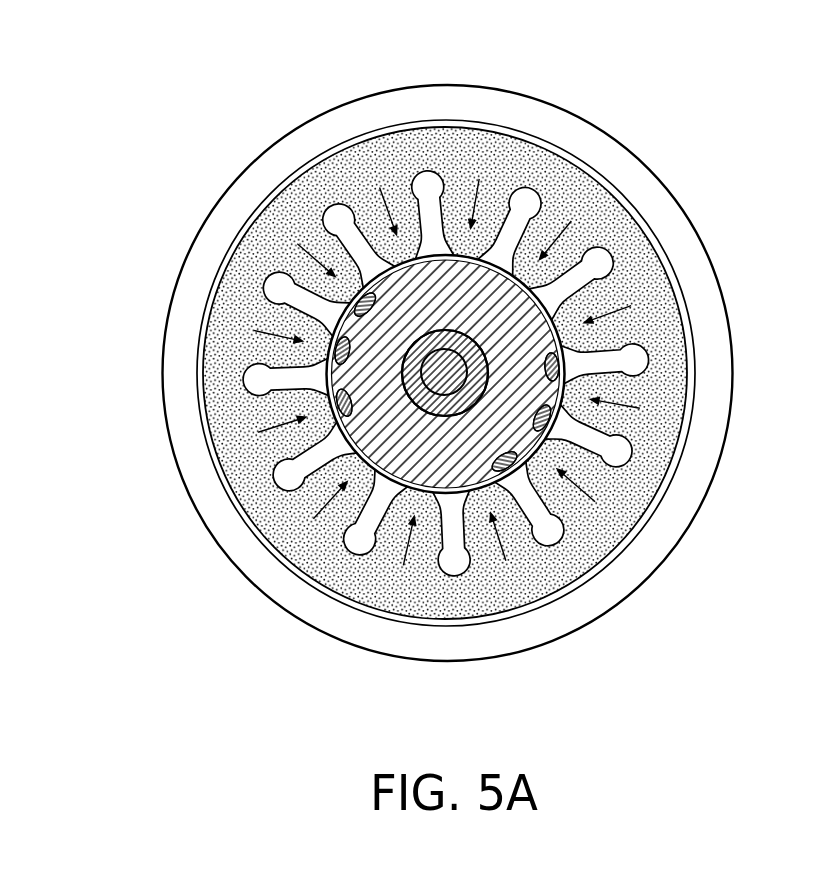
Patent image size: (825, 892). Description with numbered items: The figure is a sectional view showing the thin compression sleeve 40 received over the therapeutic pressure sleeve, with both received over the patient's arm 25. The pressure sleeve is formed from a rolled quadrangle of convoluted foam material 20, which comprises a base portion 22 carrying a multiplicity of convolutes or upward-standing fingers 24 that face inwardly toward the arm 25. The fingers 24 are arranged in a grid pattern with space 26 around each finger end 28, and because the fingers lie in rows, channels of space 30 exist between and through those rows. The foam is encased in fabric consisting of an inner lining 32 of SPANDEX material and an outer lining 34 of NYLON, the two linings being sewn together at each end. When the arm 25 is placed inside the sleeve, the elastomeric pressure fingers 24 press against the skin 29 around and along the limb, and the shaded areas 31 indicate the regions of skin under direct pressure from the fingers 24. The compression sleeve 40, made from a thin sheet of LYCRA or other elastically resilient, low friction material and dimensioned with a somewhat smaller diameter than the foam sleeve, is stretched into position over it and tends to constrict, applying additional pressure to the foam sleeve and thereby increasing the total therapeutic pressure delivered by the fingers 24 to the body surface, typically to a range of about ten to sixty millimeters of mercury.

The convoluted foam material 20 is at (288, 227).
The base portion 22 is at (632, 503).
The fingers 24 is at (313, 423).
The arm 25 is at (428, 451).
The space 26 is at (460, 573).
The finger end 28 is at (423, 391).
The skin 29 is at (537, 202).
The channels of space 30 is at (540, 410).
The shaded areas 31 is at (402, 314).
The inner lining 32 is at (520, 290).
The outer lining 34 is at (680, 446).
The compression sleeve 40 is at (457, 107).